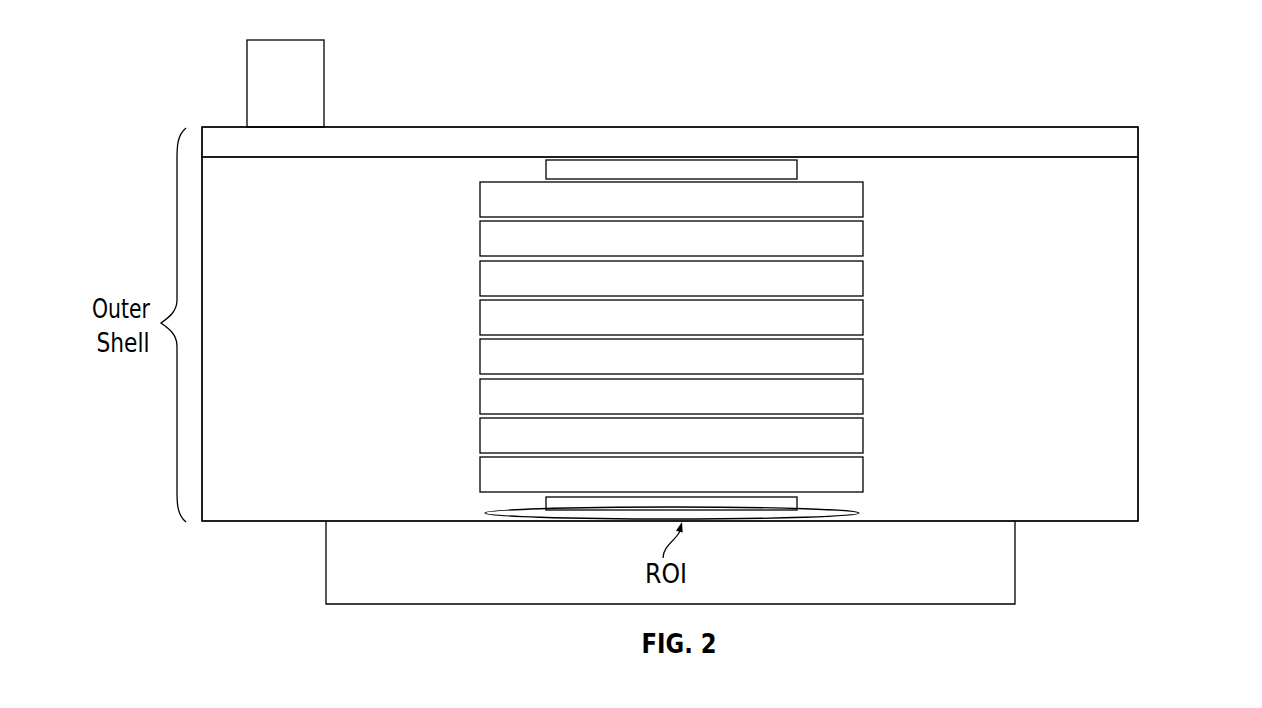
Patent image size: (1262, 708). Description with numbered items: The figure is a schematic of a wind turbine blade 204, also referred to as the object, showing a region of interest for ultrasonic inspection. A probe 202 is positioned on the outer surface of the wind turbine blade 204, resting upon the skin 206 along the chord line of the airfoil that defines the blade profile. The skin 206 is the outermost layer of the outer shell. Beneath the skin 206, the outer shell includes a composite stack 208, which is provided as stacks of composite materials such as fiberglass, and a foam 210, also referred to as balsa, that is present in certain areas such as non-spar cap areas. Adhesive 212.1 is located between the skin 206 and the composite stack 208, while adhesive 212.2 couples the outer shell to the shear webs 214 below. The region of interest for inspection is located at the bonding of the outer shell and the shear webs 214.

The probe 202 is at (309, 95).
The wind turbine blade 204 is at (1074, 84).
The skin 206 is at (1144, 141).
The composite stack 208 is at (870, 262).
The foam 210 is at (1145, 375).
The adhesive 212.1 is at (540, 167).
The adhesive 212.2 is at (808, 496).
The shear webs 214 is at (1024, 569).